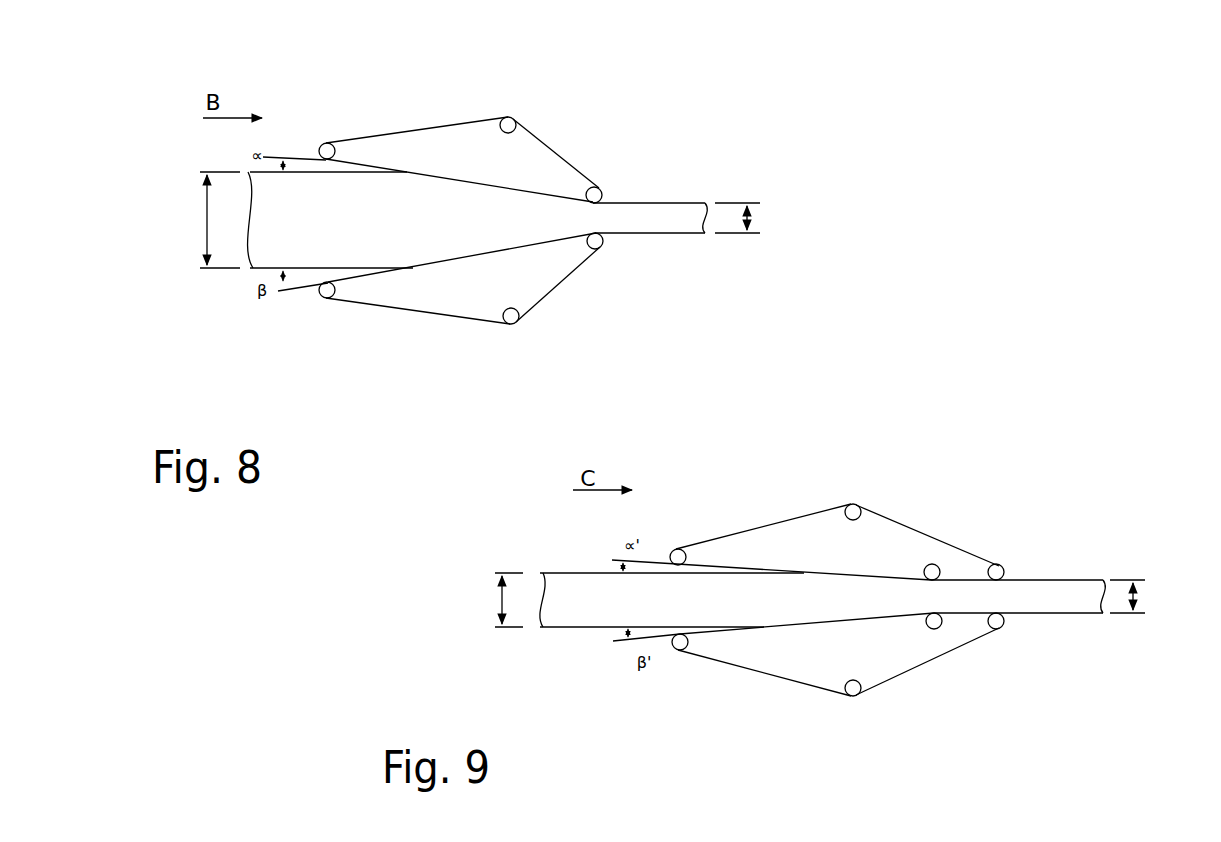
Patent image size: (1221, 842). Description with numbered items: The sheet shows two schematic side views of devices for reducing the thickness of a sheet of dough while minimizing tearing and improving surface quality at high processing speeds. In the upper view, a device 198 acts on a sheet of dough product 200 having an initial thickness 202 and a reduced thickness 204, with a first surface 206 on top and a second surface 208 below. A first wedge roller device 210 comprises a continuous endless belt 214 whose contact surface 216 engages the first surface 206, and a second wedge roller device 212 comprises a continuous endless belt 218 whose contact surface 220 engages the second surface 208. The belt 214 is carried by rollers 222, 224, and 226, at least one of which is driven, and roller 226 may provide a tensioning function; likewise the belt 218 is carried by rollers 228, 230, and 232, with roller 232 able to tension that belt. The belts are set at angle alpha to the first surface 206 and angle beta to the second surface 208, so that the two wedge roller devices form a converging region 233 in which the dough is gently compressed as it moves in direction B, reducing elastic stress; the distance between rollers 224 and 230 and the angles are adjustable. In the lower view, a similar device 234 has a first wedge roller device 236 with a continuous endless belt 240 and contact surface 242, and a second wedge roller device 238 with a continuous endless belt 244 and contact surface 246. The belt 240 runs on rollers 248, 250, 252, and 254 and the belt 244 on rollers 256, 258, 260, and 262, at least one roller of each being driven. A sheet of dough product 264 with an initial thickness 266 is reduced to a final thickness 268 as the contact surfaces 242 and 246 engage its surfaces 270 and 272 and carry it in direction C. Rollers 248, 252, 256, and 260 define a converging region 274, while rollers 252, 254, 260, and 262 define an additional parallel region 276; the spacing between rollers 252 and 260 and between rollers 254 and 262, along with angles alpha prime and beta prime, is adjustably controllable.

In FIG. 8, the device for reducing the thickness of a sheet of dough product 198 is at (497, 119).
In FIG. 8, the sheet of dough product 200 is at (426, 249).
In FIG. 8, the initial thickness 202 is at (207, 217).
In FIG. 8, the reduced thickness 204 is at (760, 218).
In FIG. 8, the first surface 206 is at (260, 171).
In FIG. 8, the second surface 208 is at (257, 272).
In FIG. 8, the first wedge roller device 210 is at (560, 146).
In FIG. 8, the second wedge roller device 212 is at (563, 294).
In FIG. 8, the continuous endless belt 214 is at (417, 89).
In FIG. 8, the contact surface 216 is at (378, 133).
In FIG. 8, the continuous endless belt 218 is at (518, 317).
In FIG. 8, the contact surface 220 is at (382, 307).
In FIG. 8, the roller 222 is at (322, 143).
In FIG. 8, the roller 224 is at (600, 186).
In FIG. 8, the roller 226 is at (516, 117).
In FIG. 8, the roller 228 is at (321, 298).
In FIG. 8, the roller 230 is at (604, 249).
In FIG. 8, the roller 232 is at (519, 323).
In FIG. 8, the converging region 233 is at (456, 218).
In FIG. 9, the device for reducing the thickness of a sheet of dough product 234 is at (856, 502).
In FIG. 9, the first wedge roller device 236 is at (943, 530).
In FIG. 9, the second wedge roller device 238 is at (930, 667).
In FIG. 9, the continuous endless belt 240 is at (772, 478).
In FIG. 9, the contact surface 242 is at (737, 533).
In FIG. 9, the continuous endless belt 244 is at (900, 695).
In FIG. 9, the contact surface 246 is at (757, 670).
In FIG. 9, the roller 248 is at (680, 549).
In FIG. 9, the roller 250 is at (860, 507).
In FIG. 9, the roller 252 is at (936, 564).
In FIG. 9, the roller 254 is at (1001, 565).
In FIG. 9, the roller 256 is at (682, 650).
In FIG. 9, the roller 258 is at (862, 694).
In FIG. 9, the roller 260 is at (940, 628).
In FIG. 9, the roller 262 is at (1003, 627).
In FIG. 9, the sheet of dough product 264 is at (823, 626).
In FIG. 9, the initial thickness 266 is at (497, 595).
In FIG. 9, the reduced thickness 268 is at (1147, 596).
In FIG. 9, the surface 270 is at (587, 573).
In FIG. 9, the surface 272 is at (587, 628).
In FIG. 9, the converging region 274 is at (823, 604).
In FIG. 9, the parallel region 276 is at (955, 602).